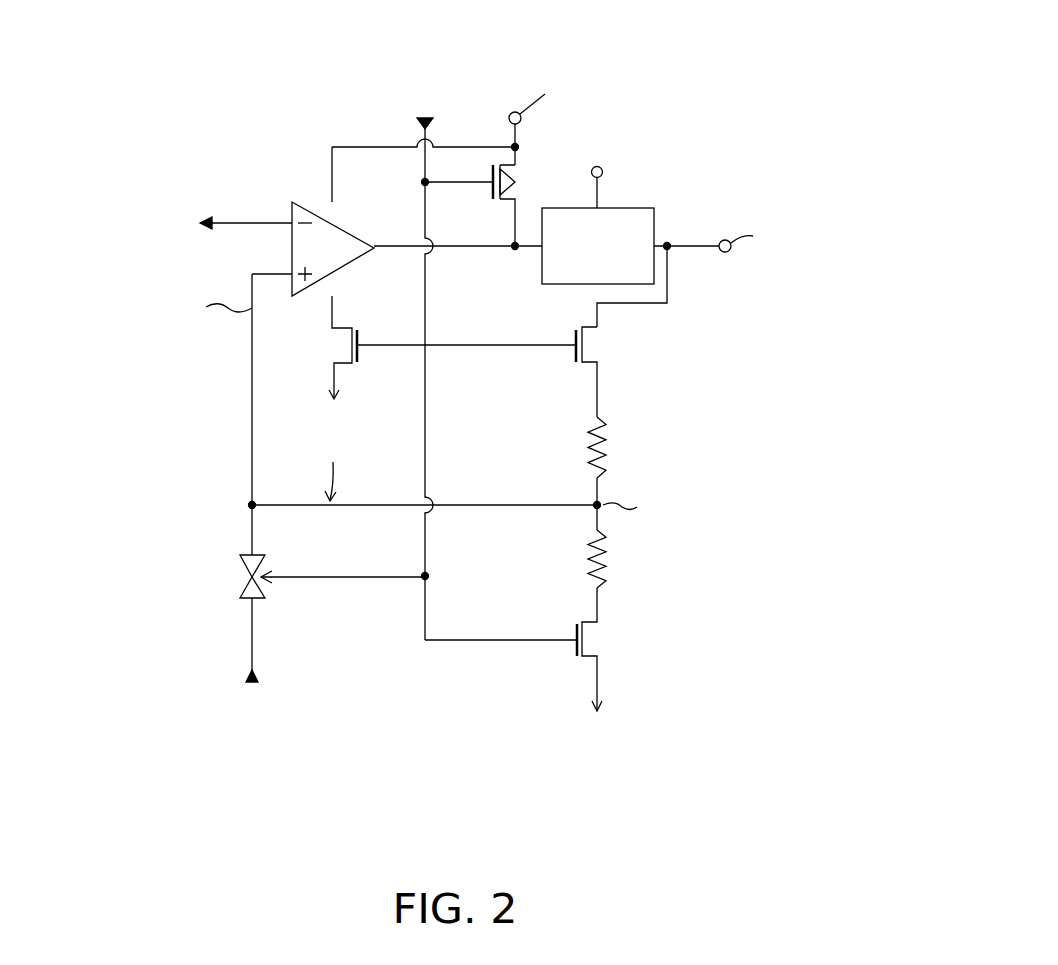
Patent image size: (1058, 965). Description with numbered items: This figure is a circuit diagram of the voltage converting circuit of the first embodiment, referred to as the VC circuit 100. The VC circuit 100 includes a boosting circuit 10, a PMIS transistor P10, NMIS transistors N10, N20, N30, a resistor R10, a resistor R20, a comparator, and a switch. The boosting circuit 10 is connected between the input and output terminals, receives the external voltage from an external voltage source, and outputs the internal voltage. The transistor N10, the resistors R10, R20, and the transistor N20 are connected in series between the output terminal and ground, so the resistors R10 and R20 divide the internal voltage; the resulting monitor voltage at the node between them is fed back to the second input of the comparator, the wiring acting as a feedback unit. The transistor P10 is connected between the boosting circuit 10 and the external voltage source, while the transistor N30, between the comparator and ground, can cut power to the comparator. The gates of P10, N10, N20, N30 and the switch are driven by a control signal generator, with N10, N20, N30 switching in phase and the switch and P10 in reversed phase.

The boosting circuit 10 is at (654, 210).
The VC circuit 100 is at (470, 782).
The PMIS transistor P10 is at (497, 205).
The NMIS transistor N10 is at (615, 372).
The NMIS transistor N20 is at (617, 649).
The NMIS transistor N30 is at (317, 347).
The resistor R10 is at (629, 447).
The resistor R20 is at (628, 559).